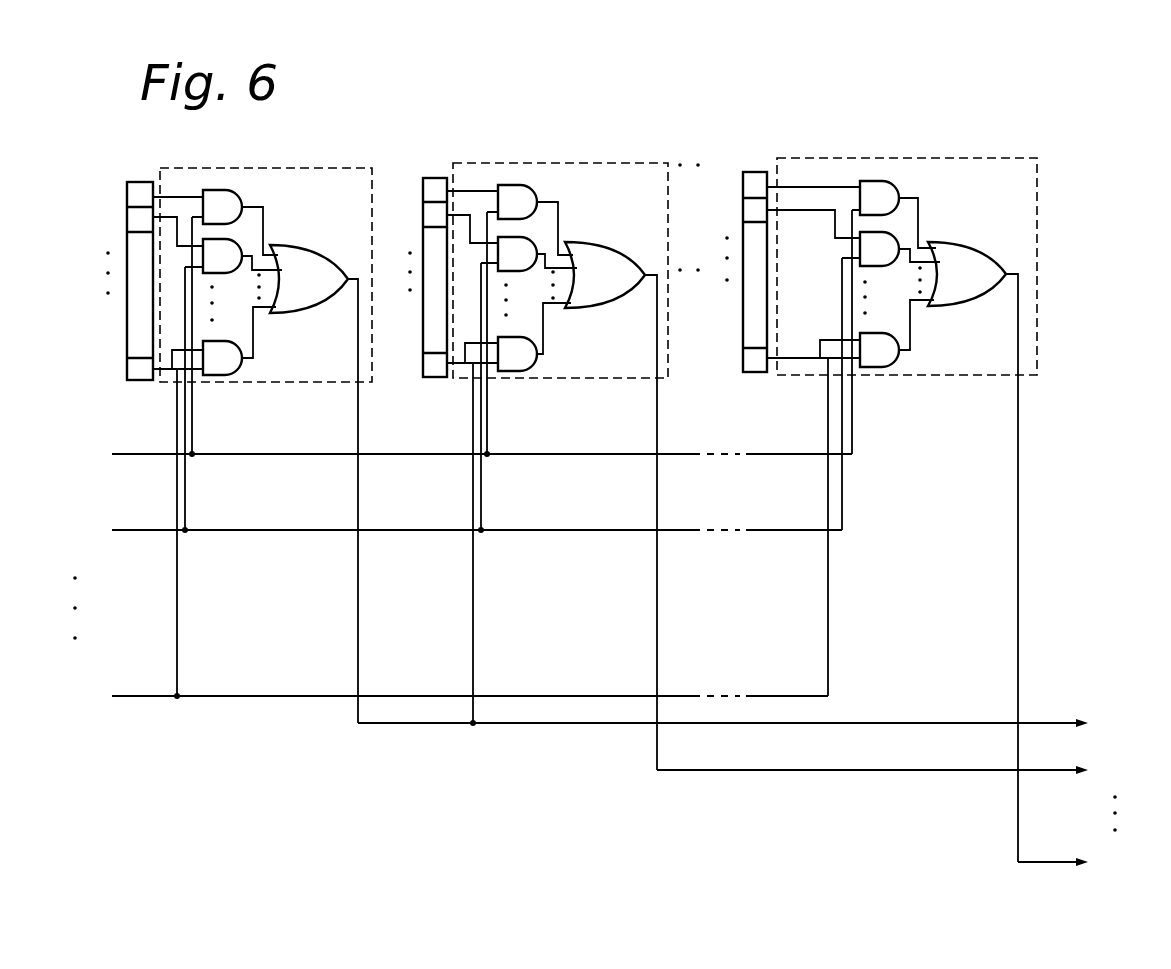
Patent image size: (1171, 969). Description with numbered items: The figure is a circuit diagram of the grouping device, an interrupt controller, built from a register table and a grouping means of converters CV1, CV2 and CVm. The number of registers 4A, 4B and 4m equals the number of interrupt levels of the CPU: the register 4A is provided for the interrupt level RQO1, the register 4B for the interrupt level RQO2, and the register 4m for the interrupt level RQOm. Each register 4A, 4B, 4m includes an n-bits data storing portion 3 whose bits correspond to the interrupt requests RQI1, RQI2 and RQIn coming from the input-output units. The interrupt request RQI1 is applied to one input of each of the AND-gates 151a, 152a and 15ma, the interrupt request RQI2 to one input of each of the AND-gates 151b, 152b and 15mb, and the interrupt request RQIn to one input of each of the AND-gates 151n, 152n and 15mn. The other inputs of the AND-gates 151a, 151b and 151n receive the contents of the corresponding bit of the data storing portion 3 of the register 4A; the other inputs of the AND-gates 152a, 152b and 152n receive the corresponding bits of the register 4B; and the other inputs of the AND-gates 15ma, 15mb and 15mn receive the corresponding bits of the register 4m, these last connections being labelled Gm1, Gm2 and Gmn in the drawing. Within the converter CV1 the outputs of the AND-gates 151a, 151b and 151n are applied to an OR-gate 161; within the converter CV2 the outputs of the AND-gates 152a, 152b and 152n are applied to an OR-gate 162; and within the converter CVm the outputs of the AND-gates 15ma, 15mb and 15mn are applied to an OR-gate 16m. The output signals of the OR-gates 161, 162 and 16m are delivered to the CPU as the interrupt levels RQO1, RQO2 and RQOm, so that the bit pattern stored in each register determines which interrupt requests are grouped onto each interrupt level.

The n-bits data storing portion 3 is at (128, 186).
The register 4A is at (127, 323).
The register 4B is at (423, 238).
The register 4m is at (743, 309).
The converter CV1 is at (293, 168).
The converter CV2 is at (598, 163).
The converter CVm is at (958, 158).
The AND-gate 151a is at (214, 190).
The AND-gate 151b is at (252, 336).
The AND-gate 151n is at (213, 377).
The AND-gate 152a is at (519, 185).
The AND-gate 152b is at (545, 318).
The AND-gate 152n is at (509, 372).
The AND-gate 15ma is at (873, 181).
The AND-gate 15mb is at (903, 322).
The AND-gate 15mn is at (873, 368).
The OR-gate 161 is at (312, 314).
The OR-gate 162 is at (620, 308).
The OR-gate 16m is at (965, 306).
The gate signal line Gm1 is at (813, 175).
The gate signal line Gm2 is at (813, 213).
The gate signal line Gmn is at (813, 349).
The interrupt request RQI1 is at (445, 462).
The interrupt request RQI2 is at (440, 538).
The interrupt request RQIn is at (433, 701).
The interrupt level RQO1 is at (760, 725).
The interrupt level RQO2 is at (909, 772).
The interrupt level RQOm is at (1094, 862).